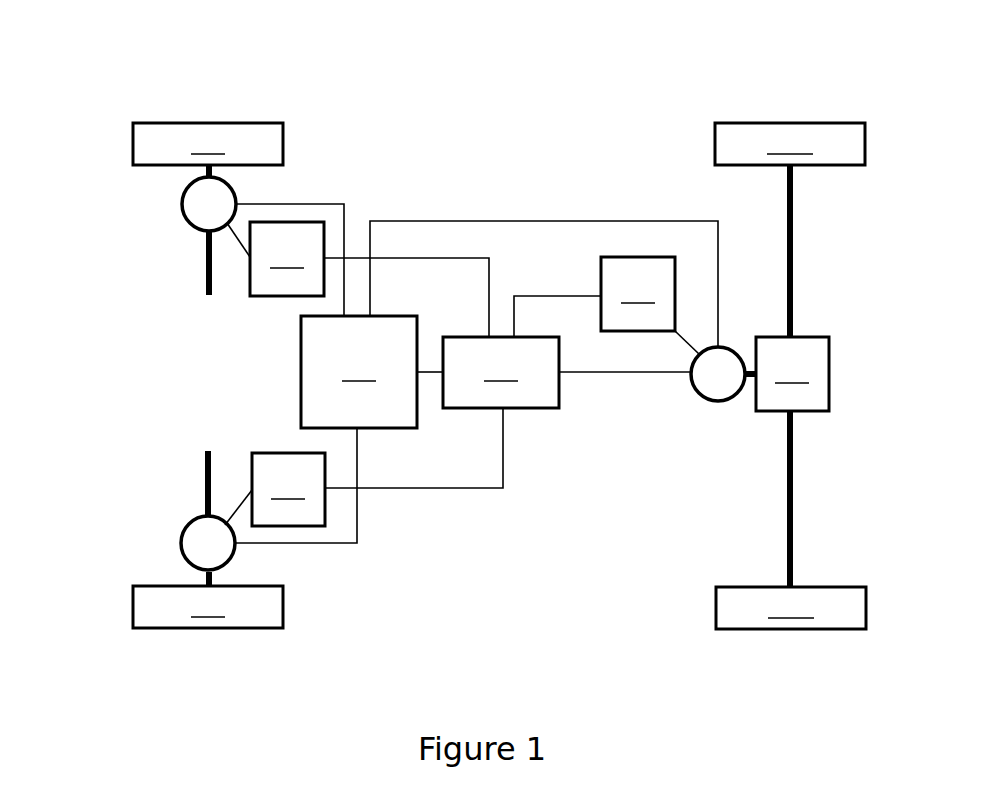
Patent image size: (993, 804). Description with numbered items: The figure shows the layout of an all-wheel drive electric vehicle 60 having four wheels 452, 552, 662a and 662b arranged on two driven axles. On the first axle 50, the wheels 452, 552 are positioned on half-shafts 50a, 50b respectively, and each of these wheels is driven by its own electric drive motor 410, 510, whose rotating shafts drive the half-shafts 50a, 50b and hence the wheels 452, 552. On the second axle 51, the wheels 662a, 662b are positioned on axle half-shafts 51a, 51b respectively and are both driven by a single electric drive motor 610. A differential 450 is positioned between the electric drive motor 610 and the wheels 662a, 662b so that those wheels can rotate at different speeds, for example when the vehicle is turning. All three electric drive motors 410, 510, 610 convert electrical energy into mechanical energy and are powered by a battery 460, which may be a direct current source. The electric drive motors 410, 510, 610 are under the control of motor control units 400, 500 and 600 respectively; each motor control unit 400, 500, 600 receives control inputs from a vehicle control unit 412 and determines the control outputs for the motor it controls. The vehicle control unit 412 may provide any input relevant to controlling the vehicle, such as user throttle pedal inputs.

The electric vehicle 60 is at (925, 68).
The axle 50 is at (91, 277).
The half-shaft 50a is at (205, 278).
The half-shaft 50b is at (205, 478).
The electric drive motor 410 is at (181, 205).
The electric drive motor 510 is at (181, 545).
The motor control unit 400 is at (287, 259).
The motor control unit 500 is at (288, 489).
The wheel 452 is at (208, 150).
The wheel 552 is at (208, 600).
The battery 460 is at (359, 372).
The vehicle control unit 412 is at (501, 372).
The motor control unit 600 is at (638, 294).
The electric drive motor 610 is at (715, 403).
The differential 450 is at (787, 374).
The axle 51 is at (888, 192).
The axle half-shaft 51a is at (795, 263).
The axle half-shaft 51b is at (795, 500).
The wheel 662a is at (790, 144).
The wheel 662b is at (791, 608).